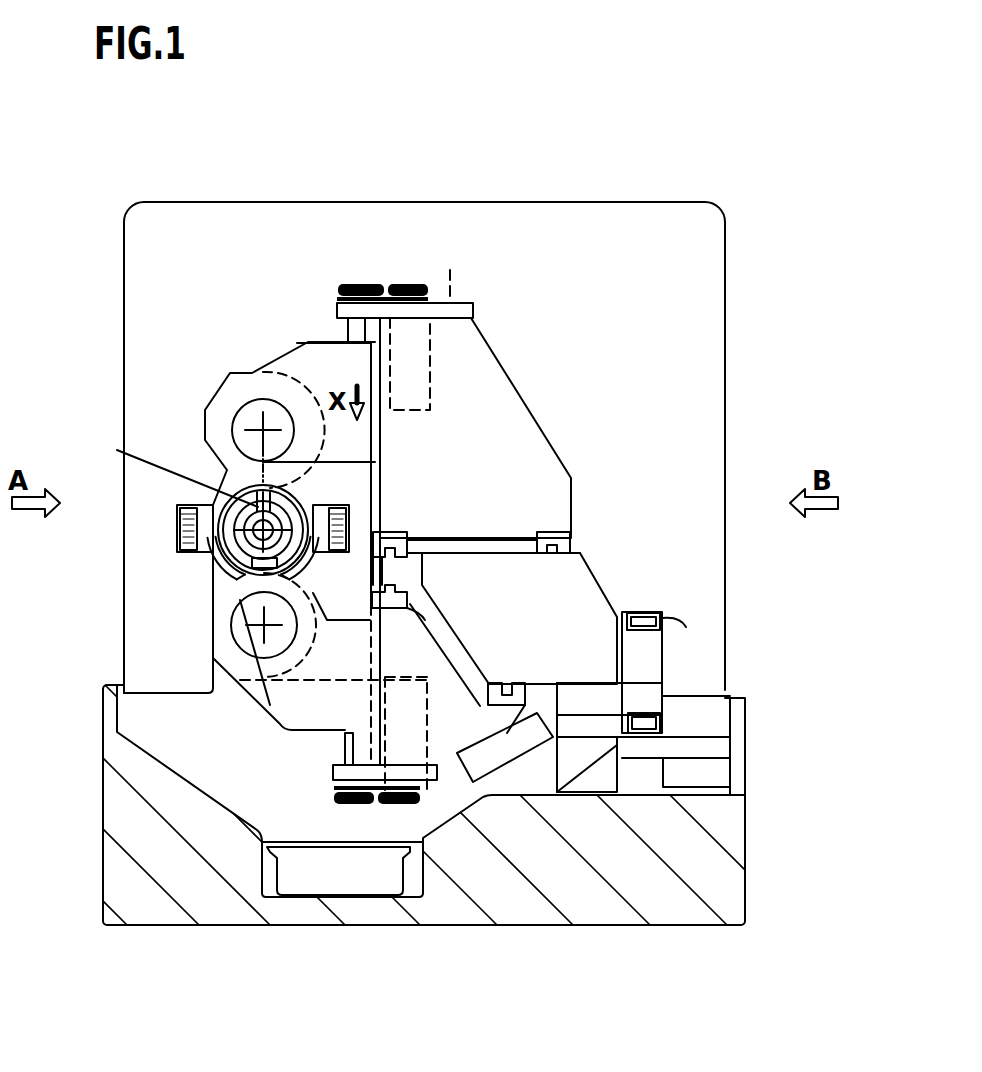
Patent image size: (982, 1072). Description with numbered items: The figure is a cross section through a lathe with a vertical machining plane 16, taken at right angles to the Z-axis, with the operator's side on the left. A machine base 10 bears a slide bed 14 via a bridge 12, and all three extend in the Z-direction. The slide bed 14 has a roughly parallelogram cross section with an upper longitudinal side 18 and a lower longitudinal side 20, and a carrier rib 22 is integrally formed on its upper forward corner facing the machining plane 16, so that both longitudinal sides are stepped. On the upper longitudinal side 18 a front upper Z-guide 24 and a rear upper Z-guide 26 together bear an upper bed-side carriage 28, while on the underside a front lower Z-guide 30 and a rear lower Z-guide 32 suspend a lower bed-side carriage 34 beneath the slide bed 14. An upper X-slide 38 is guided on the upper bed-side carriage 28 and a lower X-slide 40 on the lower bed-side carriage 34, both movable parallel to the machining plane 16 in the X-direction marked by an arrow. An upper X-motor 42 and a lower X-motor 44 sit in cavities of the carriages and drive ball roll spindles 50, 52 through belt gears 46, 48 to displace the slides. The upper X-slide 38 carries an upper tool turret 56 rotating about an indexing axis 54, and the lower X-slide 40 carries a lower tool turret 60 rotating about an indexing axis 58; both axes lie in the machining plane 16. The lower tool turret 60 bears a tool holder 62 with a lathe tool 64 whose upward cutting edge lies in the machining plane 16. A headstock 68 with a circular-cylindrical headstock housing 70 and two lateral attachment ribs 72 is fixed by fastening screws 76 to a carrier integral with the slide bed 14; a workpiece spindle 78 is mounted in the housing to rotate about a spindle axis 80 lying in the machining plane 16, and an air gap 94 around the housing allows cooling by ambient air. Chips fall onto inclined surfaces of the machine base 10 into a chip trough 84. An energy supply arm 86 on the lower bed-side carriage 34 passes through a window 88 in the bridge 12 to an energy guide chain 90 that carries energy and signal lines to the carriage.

The machine base 10 is at (752, 878).
The bridge 12 is at (622, 762).
The slide bed 14 is at (606, 580).
The machining plane 16 is at (250, 443).
The upper longitudinal side 18 is at (501, 550).
The lower longitudinal side 20 is at (555, 737).
The carrier rib 22 is at (385, 574).
The front upper Z-guide 24 is at (399, 530).
The rear upper Z-guide 26 is at (573, 545).
The upper bed-side carriage 28 is at (492, 336).
The front lower Z-guide 30 is at (404, 610).
The rear lower Z-guide 32 is at (462, 767).
The lower bed-side carriage 34 is at (492, 712).
The upper X-slide 38 is at (297, 338).
The lower X-slide 40 is at (268, 718).
The upper X-motor 42 is at (432, 348).
The lower X-motor 44 is at (432, 692).
The gear 46 is at (382, 281).
The gear 48 is at (380, 808).
The ball roll spindle 50 is at (352, 332).
The ball roll spindle 52 is at (348, 738).
The indexing axis 54 is at (263, 430).
The upper tool turret 56 is at (236, 366).
The indexing axis 58 is at (262, 627).
The lower tool turret 60 is at (233, 682).
The tool holder 62 is at (255, 598).
The lathe tool 64 is at (280, 566).
The headstock 68 is at (206, 471).
The headstock housing 70 is at (218, 548).
The attachment ribs 72 is at (178, 512).
The fastening screws 76 is at (178, 535).
The workpiece spindle 78 is at (232, 562).
The spindle axis 80 is at (117, 450).
The chip trough 84 is at (347, 883).
The energy supply arm 86 is at (544, 692).
The window 88 is at (593, 695).
The energy guide chain 90 is at (664, 722).
The air gap 94 is at (245, 575).